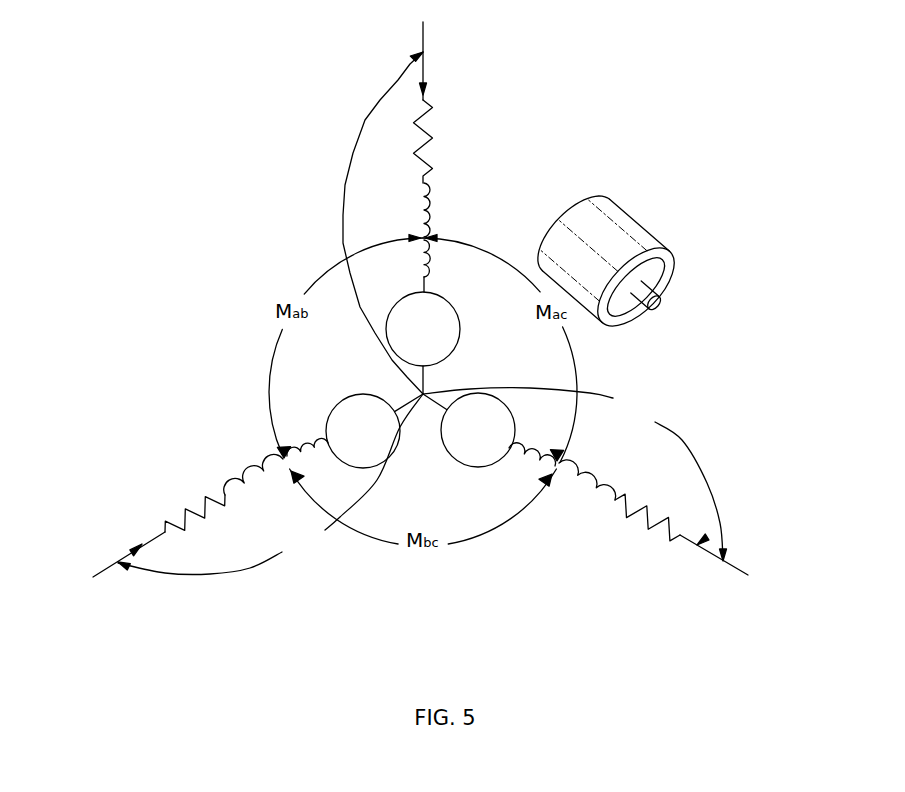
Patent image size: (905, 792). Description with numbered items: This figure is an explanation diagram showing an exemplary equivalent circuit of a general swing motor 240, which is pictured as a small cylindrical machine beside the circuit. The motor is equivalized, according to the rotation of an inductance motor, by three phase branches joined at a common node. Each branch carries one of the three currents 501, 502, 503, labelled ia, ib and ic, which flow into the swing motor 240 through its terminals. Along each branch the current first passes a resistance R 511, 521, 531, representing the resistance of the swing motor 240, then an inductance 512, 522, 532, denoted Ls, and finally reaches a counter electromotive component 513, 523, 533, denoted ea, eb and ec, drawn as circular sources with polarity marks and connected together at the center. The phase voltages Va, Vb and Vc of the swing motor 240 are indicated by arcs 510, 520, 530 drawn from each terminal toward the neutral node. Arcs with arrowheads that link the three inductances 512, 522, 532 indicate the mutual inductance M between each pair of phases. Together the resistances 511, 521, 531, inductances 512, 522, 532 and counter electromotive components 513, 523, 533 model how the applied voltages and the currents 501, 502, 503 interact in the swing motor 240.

The swing motor 240 is at (633, 218).
The current 501 is at (462, 62).
The current 502 is at (88, 540).
The current 503 is at (700, 580).
The phase a voltage Va 510 is at (348, 168).
The resistance R 511 is at (458, 145).
The inductance 512 is at (470, 209).
The counter electromotive component 513 is at (462, 330).
The phase b voltage Vb 520 is at (262, 567).
The resistance R 521 is at (167, 480).
The inductance 522 is at (240, 452).
The counter electromotive component 523 is at (343, 393).
The phase c voltage Vc 530 is at (678, 438).
The resistance R 531 is at (637, 516).
The inductance 532 is at (613, 458).
The counter electromotive component 533 is at (457, 468).